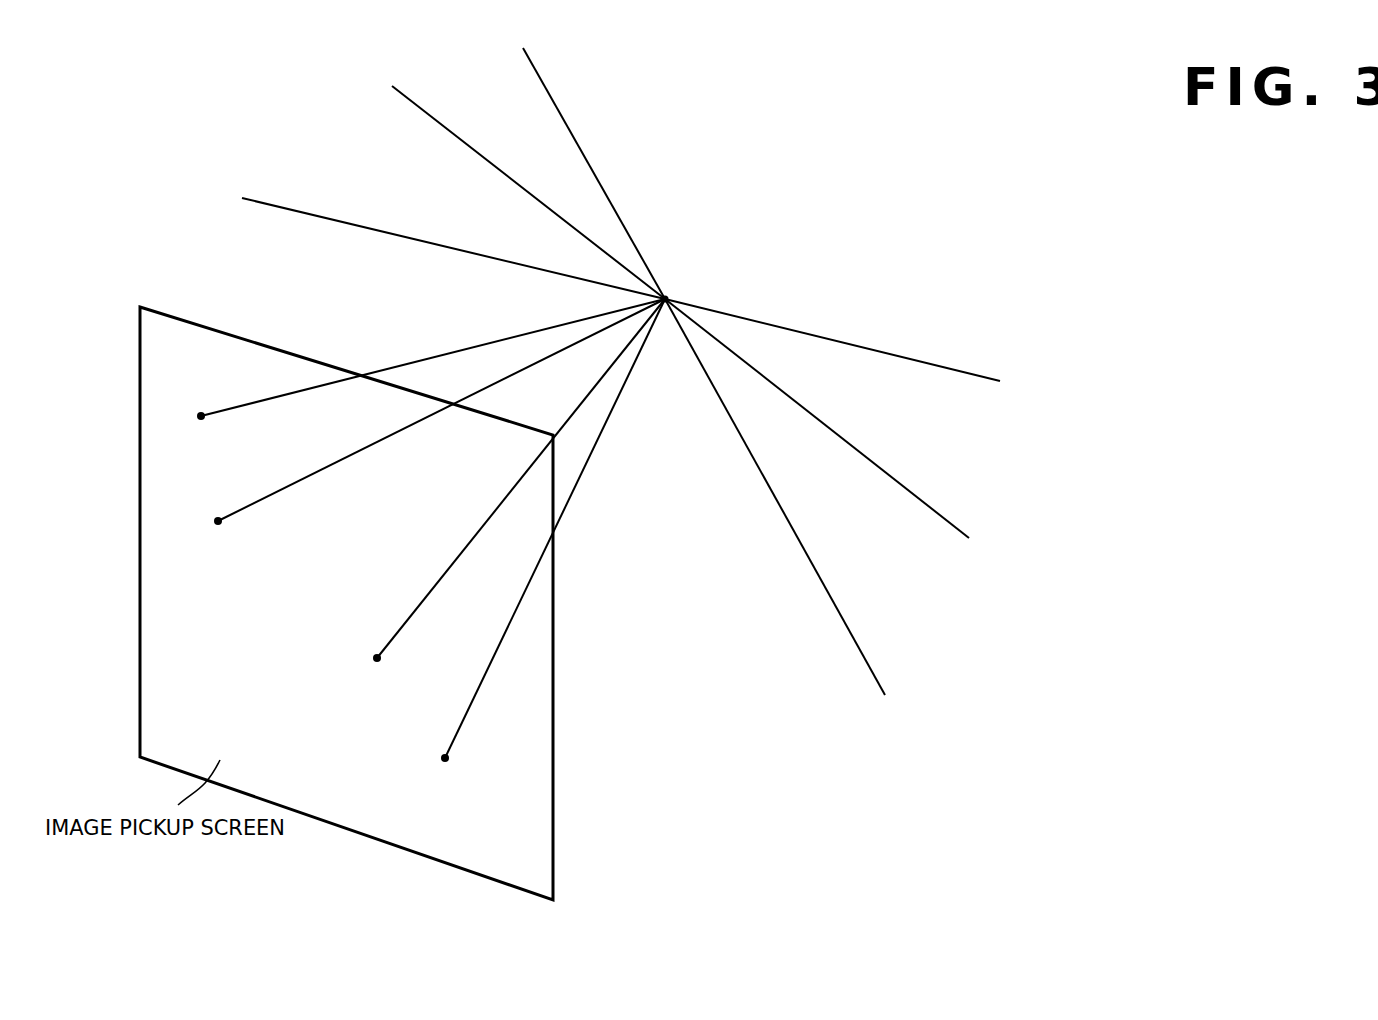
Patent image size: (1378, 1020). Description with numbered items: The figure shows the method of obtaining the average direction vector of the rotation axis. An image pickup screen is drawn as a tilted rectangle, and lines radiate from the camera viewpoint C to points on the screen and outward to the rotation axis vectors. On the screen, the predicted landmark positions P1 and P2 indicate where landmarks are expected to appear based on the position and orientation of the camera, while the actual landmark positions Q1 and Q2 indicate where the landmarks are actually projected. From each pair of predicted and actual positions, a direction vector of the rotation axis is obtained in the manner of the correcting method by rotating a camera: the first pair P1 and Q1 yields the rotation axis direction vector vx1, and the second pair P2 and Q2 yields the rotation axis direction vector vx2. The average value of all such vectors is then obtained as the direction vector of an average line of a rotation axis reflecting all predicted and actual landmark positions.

The camera viewpoint C is at (675, 287).
The predicted landmark position P1 is at (514, 495).
The predicted landmark position P2 is at (413, 363).
The actual landmark position Q1 is at (546, 545).
The actual landmark position Q2 is at (423, 417).
The direction vector of rotation axis vx1 is at (853, 347).
The direction vector of rotation axis vx2 is at (790, 511).